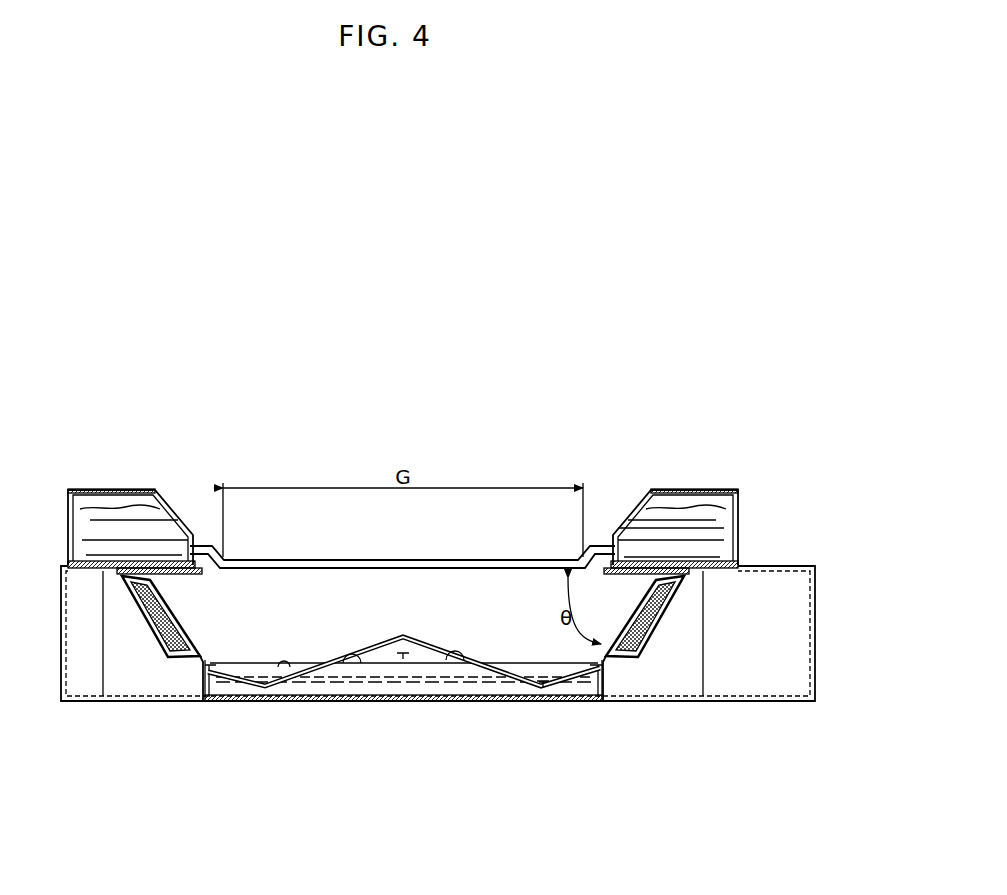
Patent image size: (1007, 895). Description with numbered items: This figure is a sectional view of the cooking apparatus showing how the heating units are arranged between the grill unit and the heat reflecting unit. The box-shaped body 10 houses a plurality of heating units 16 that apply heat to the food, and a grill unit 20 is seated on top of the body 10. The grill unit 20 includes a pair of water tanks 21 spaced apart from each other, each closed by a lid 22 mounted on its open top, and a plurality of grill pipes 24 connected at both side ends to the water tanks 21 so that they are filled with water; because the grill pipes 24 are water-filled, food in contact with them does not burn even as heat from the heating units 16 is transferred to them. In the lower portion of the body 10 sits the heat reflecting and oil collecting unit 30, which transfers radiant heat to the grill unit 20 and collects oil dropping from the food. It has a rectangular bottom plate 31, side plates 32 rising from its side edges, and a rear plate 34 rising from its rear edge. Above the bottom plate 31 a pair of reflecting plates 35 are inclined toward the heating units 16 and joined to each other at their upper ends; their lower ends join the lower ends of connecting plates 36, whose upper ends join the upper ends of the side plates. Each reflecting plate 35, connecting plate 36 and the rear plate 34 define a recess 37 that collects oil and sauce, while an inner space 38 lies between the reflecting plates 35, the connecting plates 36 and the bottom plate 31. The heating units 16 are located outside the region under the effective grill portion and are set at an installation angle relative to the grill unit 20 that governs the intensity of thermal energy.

The body 10 is at (776, 565).
The heating unit 16 is at (122, 608).
The grill unit 20 is at (682, 489).
The water tank 21 is at (73, 528).
The lid 22 is at (121, 489).
The grill pipe 24 is at (392, 569).
The heat reflecting and oil collecting unit 30 is at (403, 717).
The bottom plate 31 is at (506, 700).
The side plate 32 is at (207, 700).
The rear plate 34 is at (279, 666).
The reflecting plate 35 is at (342, 679).
The connecting plate 36 is at (234, 678).
The recess 37 is at (543, 687).
The inner space 38 is at (403, 659).